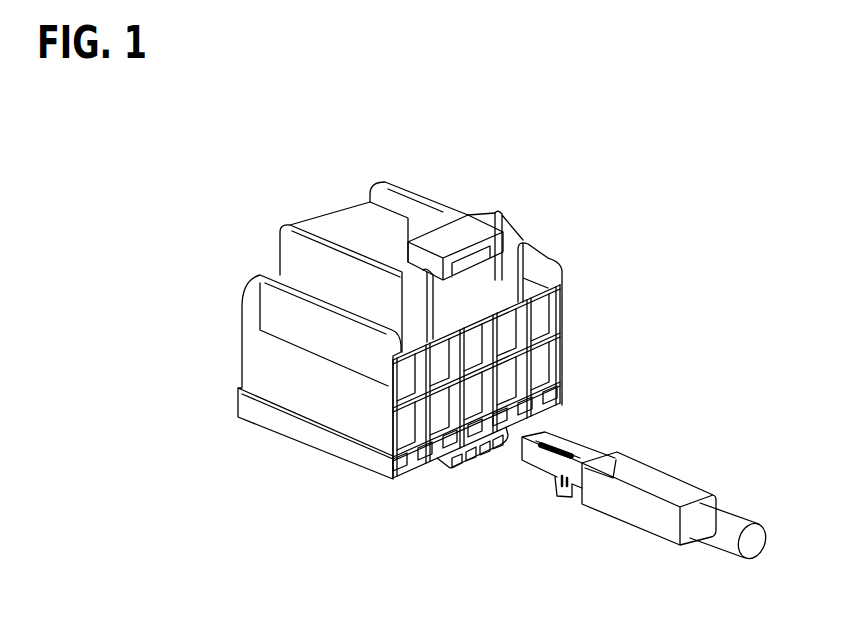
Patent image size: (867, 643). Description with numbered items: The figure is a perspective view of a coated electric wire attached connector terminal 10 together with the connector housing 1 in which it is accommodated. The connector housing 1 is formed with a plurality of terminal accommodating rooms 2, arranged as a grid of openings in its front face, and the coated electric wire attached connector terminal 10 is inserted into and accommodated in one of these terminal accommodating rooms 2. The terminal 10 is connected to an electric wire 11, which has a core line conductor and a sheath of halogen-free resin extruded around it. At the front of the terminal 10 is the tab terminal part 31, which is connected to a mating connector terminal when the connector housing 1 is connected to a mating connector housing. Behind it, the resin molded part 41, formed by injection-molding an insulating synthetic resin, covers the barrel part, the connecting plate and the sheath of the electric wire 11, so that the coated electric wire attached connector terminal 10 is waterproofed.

The connector housing 1 is at (452, 204).
The terminal accommodating rooms 2 is at (433, 417).
The coated electric wire attached connector terminal 10 is at (562, 515).
The electric wire 11 is at (722, 540).
The tab terminal part 31 is at (562, 437).
The resin molded part 41 is at (640, 517).